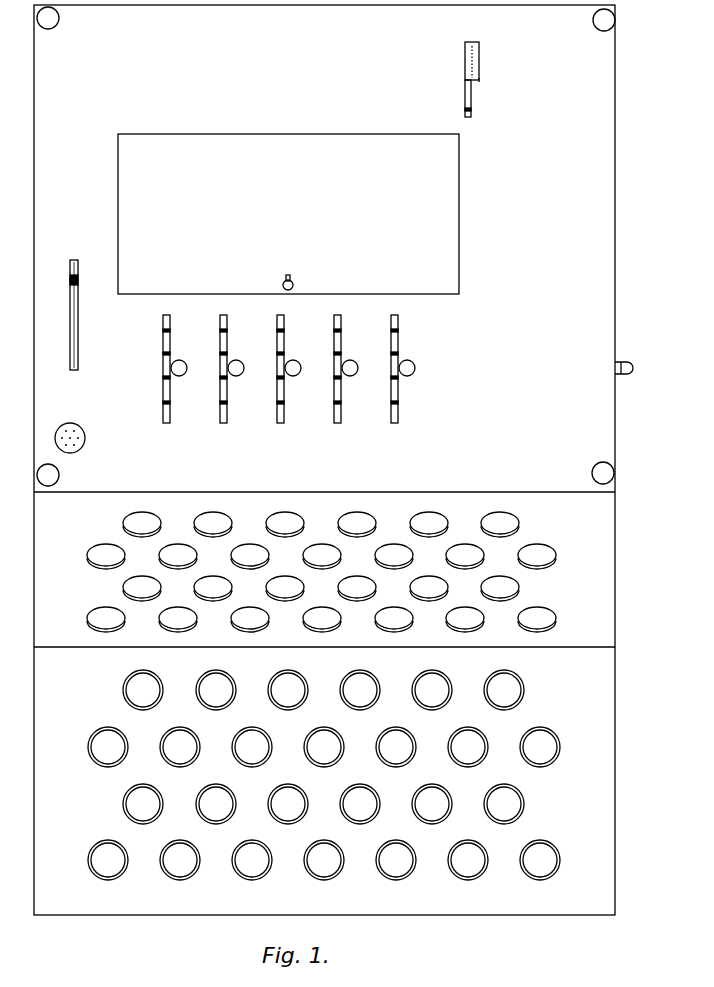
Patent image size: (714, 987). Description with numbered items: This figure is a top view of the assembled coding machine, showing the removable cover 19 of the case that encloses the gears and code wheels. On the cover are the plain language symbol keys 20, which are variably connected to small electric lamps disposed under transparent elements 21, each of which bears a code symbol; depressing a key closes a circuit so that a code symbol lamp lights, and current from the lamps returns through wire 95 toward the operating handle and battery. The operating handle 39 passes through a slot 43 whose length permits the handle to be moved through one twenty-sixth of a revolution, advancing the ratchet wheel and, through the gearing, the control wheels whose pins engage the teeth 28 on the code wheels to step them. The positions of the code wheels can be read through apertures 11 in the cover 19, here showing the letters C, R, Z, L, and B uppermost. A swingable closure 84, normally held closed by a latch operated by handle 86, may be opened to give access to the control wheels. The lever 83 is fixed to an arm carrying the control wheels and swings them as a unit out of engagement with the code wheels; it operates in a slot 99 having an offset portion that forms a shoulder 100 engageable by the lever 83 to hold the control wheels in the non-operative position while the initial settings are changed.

The removable cover 19 is at (603, 220).
The plain language symbol keys 20 is at (545, 730).
The transparent elements 21 is at (521, 583).
The teeth 28 is at (395, 352).
The letter indicia 11 is at (416, 368).
The operating handle 39 is at (77, 288).
The slot 43 is at (78, 360).
The swingable closure 84 is at (451, 232).
The handle 86 is at (293, 283).
The wire 95 is at (86, 440).
The slot 99 is at (467, 43).
The lever 83 is at (465, 62).
The shoulder 100 is at (481, 86).